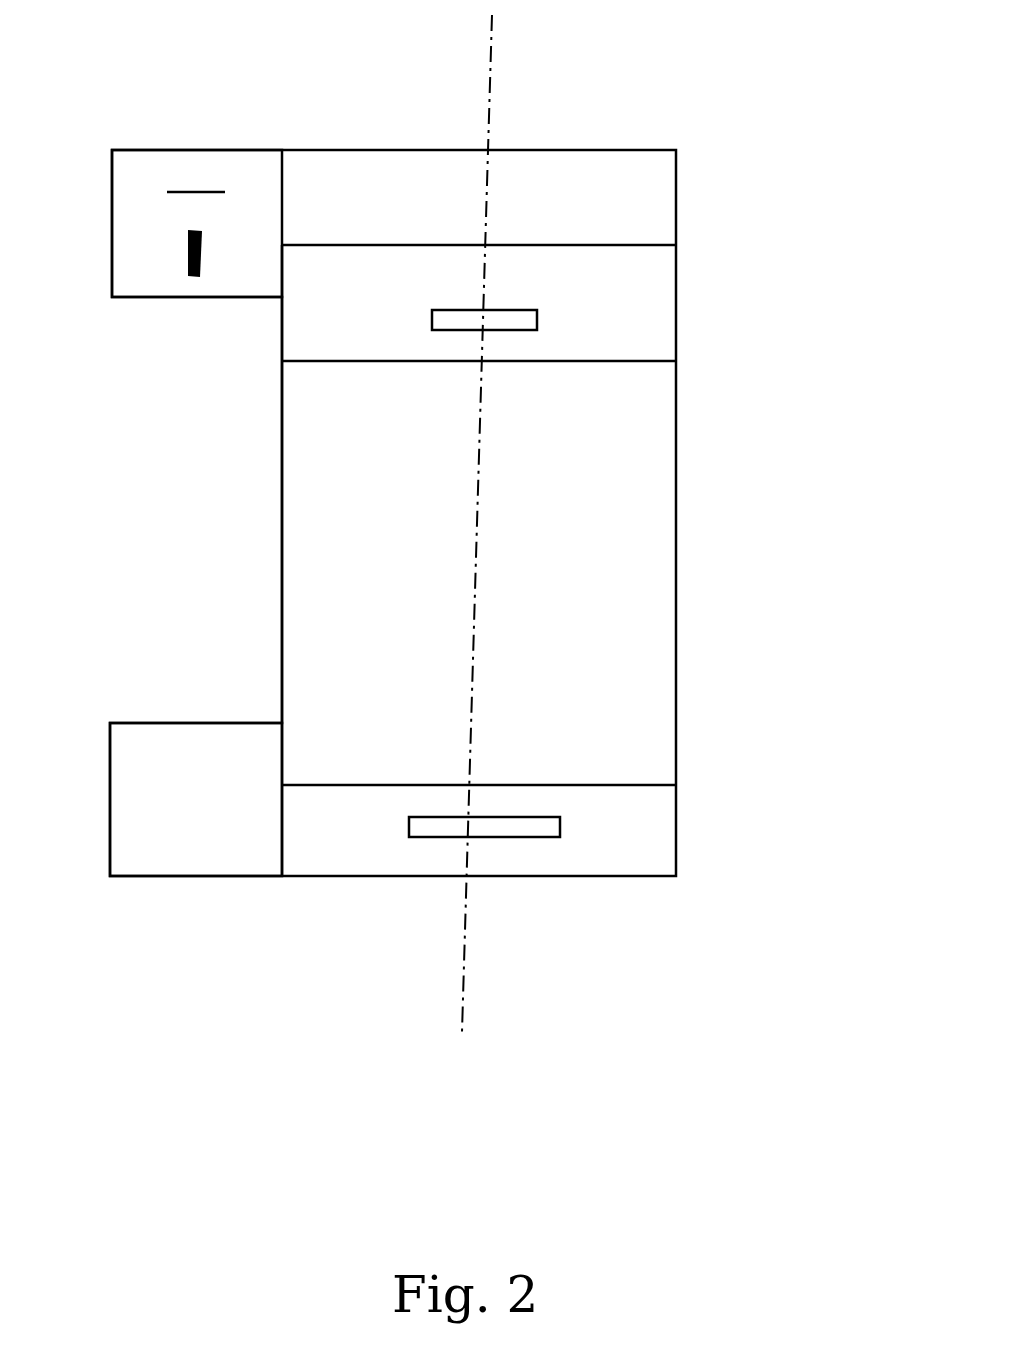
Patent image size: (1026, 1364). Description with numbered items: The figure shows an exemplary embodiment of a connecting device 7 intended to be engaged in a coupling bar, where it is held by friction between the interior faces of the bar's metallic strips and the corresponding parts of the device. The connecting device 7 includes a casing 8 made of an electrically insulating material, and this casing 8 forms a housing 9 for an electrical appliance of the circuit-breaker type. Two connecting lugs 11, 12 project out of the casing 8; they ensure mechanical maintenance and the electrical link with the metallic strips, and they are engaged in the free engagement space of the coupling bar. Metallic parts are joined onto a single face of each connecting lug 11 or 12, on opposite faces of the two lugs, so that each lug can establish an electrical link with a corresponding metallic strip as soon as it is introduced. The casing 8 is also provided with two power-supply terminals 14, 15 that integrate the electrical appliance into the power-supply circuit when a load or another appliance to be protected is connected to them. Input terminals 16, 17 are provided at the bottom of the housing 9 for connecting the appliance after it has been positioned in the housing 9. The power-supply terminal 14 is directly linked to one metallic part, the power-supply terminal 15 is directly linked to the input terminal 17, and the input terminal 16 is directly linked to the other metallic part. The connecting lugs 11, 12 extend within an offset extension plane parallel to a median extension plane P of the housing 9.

The connecting device 7 is at (283, 952).
The casing 8 is at (677, 395).
The housing 9 is at (622, 703).
The connecting lug 11 is at (222, 722).
The connecting lug 12 is at (230, 302).
The power-supply terminal 14 is at (185, 252).
The power-supply terminal 15 is at (195, 192).
The input terminal 16 is at (492, 825).
The input terminal 17 is at (507, 320).
The median extension plane P is at (492, 32).